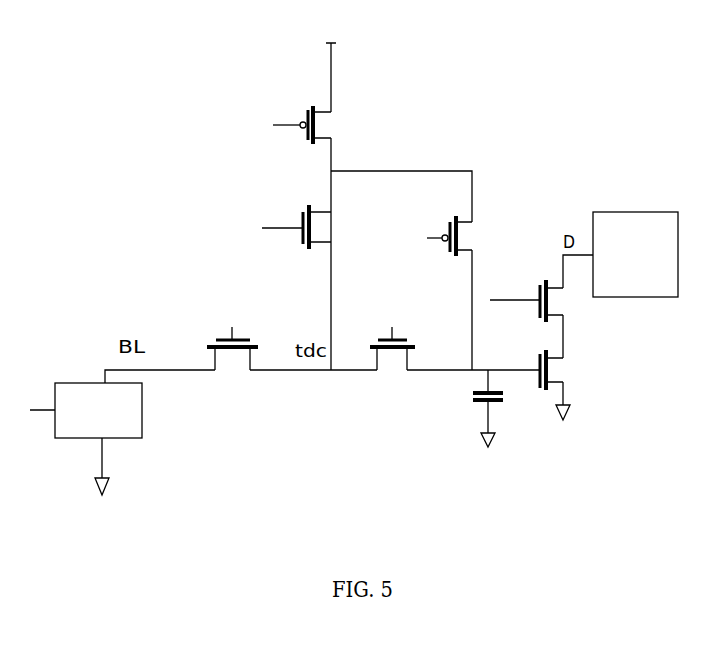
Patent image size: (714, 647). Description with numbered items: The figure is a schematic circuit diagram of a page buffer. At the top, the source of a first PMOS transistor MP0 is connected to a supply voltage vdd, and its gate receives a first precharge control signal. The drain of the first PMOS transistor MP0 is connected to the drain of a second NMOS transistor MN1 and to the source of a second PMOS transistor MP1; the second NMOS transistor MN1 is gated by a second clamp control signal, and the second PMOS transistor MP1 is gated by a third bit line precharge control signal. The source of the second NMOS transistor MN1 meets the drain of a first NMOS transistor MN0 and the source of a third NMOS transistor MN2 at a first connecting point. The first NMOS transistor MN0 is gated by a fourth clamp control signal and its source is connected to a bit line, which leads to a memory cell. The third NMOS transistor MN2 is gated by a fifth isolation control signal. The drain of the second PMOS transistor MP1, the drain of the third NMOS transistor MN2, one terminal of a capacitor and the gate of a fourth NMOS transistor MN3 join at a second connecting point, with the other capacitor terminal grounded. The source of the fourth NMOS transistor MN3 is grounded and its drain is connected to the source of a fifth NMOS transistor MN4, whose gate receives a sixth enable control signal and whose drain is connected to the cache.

The first PMOS transistor MP0 is at (287, 230).
The second NMOS transistor MN1 is at (283, 218).
The second PMOS transistor MP1 is at (458, 284).
The fifth NMOS transistor MN4 is at (552, 316).
The fourth NMOS transistor MN3 is at (560, 383).
The first NMOS transistor MN0 is at (238, 352).
The third NMOS transistor MN2 is at (389, 350).
The element cell is at (77, 439).
The element cache is at (635, 254).
The supply voltage vdd is at (323, 65).